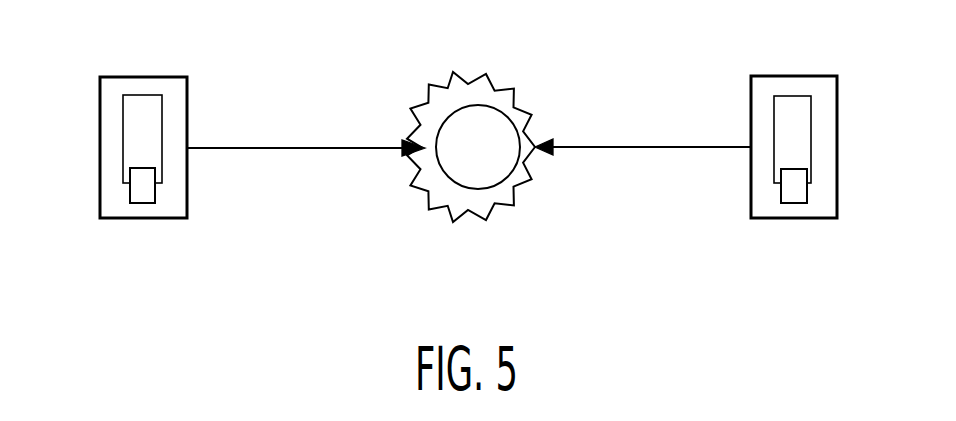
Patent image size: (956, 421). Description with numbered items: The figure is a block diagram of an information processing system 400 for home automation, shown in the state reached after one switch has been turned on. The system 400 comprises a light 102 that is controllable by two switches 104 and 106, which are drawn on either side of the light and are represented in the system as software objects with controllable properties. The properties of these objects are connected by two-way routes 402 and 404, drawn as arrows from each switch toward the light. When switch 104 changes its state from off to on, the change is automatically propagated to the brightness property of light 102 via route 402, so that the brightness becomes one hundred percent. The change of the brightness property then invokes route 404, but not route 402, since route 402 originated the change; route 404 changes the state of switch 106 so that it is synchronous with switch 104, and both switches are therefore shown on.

The information processing system 400 is at (708, 293).
The light 102 is at (452, 125).
The switch 104 is at (110, 100).
The switch 106 is at (751, 108).
The two-way route 402 is at (334, 146).
The two-way route 404 is at (655, 146).